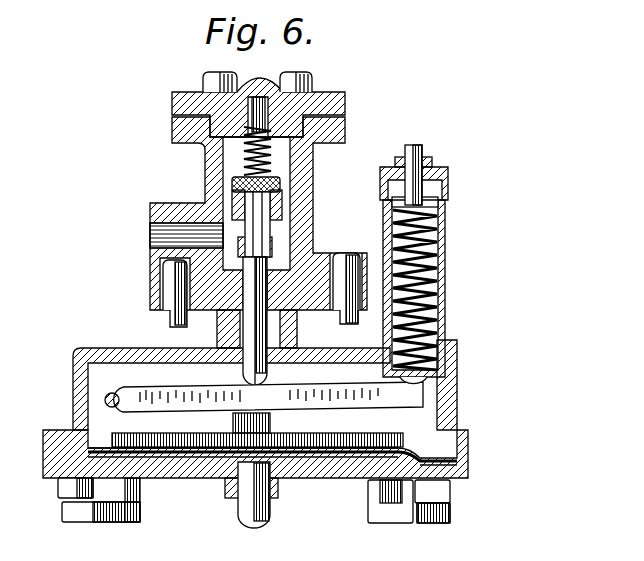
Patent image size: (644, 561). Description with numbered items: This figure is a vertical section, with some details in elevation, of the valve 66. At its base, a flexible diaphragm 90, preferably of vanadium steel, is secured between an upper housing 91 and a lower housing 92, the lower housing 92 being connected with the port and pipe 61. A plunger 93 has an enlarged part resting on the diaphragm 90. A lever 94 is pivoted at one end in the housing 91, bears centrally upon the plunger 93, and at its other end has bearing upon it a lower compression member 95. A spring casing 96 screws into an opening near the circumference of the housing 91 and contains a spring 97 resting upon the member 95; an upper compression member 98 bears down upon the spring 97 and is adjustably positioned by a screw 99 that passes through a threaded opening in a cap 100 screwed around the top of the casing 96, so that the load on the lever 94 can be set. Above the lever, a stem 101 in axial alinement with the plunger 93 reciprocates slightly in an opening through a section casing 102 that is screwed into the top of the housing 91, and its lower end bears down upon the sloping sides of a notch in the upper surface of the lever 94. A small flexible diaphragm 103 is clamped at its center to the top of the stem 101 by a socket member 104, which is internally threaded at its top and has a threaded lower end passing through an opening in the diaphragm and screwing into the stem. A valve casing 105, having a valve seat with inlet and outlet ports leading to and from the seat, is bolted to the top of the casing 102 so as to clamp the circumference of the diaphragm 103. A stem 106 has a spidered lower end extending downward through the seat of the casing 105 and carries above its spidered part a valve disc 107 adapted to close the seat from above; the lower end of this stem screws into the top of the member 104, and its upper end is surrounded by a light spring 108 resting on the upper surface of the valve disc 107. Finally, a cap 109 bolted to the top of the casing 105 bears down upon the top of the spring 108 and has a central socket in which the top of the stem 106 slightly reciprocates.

The port and pipe 61 is at (247, 510).
The valve 66 is at (162, 290).
The flexible diaphragm 90 is at (348, 450).
The upper housing 91 is at (447, 408).
The lower housing 92 is at (450, 465).
The plunger 93 is at (270, 431).
The lever 94 is at (147, 395).
The lower compression member 95 is at (423, 377).
The spring casing 96 is at (440, 273).
The spring 97 is at (432, 245).
The upper compression member 98 is at (430, 198).
The screw 99 is at (422, 150).
The cap 100 is at (437, 175).
The stem 101 is at (253, 345).
The section casing 102 is at (290, 330).
The small flexible diaphragm 103 is at (278, 262).
The socket member 104 is at (310, 208).
The valve casing 105 is at (300, 175).
The stem 106 is at (257, 217).
The valve disc 107 is at (247, 178).
The light spring 108 is at (277, 143).
The cap 109 is at (343, 102).